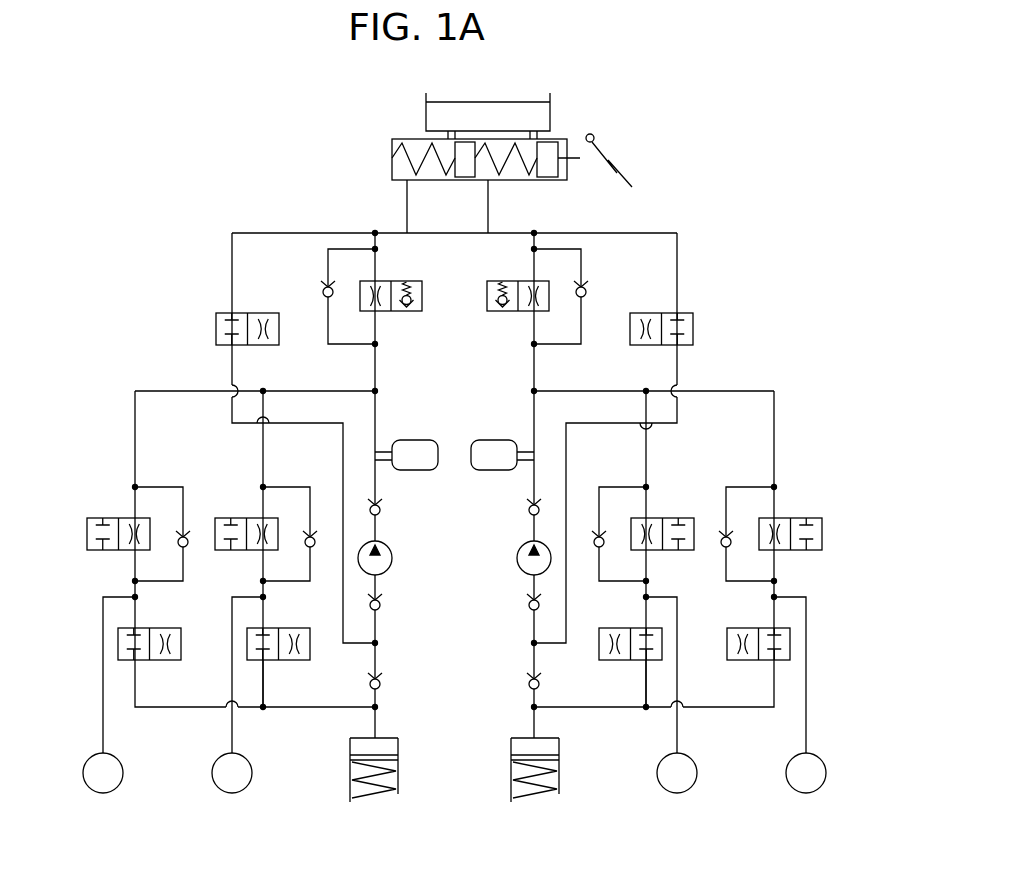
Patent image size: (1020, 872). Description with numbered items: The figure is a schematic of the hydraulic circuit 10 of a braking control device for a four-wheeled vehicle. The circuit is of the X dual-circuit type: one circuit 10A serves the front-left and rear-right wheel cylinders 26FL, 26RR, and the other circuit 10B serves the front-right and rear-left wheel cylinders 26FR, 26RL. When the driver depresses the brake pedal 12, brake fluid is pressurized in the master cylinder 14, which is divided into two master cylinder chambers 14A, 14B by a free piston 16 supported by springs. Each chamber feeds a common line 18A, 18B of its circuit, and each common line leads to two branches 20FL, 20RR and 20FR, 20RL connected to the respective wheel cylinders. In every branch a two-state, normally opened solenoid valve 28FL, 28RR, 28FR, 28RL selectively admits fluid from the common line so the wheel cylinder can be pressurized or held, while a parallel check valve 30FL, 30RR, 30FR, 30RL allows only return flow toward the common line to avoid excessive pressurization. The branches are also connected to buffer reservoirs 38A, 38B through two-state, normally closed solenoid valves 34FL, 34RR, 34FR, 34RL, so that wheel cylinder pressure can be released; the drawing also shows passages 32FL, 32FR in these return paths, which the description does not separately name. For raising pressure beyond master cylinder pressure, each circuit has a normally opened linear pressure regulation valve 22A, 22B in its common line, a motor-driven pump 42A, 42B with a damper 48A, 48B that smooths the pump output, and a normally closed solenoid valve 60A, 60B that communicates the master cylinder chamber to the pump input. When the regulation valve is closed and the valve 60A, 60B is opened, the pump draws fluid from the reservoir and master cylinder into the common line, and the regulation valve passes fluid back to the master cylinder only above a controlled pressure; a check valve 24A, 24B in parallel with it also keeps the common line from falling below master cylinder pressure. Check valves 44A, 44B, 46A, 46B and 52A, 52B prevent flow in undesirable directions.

The hydraulic circuit 10 is at (262, 133).
The first circuit 10A is at (693, 212).
The second circuit 10B is at (175, 218).
The brake pedal 12 is at (612, 157).
The master cylinder 14 is at (417, 137).
The master cylinder chamber 14A is at (510, 173).
The master cylinder chamber 14B is at (398, 170).
The free piston 16 is at (467, 170).
The common line 18A is at (532, 357).
The common line 18B is at (377, 355).
The branch 20RL is at (132, 433).
The branch 20FR is at (262, 443).
The branch 20FL is at (647, 443).
The branch 20RR is at (775, 453).
The linear pressure regulation valve 22A is at (517, 282).
The linear pressure regulation valve 22B is at (385, 282).
The check valve 24A is at (588, 298).
The check valve 24B is at (322, 298).
The wheel cylinder 26RL is at (122, 780).
The wheel cylinder 26FR is at (245, 780).
The wheel cylinder 26FL is at (658, 780).
The wheel cylinder 26RR is at (785, 782).
The solenoid valve 28RL is at (132, 518).
The solenoid valve 28FR is at (258, 518).
The solenoid valve 28FL is at (655, 518).
The solenoid valve 28RR is at (778, 518).
The check valve 30RL is at (186, 548).
The check valve 30FR is at (312, 548).
The check valve 30FL is at (595, 545).
The check valve 30RR is at (724, 545).
The return passage 32FR is at (265, 708).
The return passage 32FL is at (645, 708).
The solenoid valve 34RL is at (138, 661).
The solenoid valve 34FR is at (267, 661).
The solenoid valve 34FL is at (635, 661).
The solenoid valve 34RR is at (765, 661).
The buffer reservoir 38A is at (511, 790).
The buffer reservoir 38B is at (398, 790).
The motor-driven pump 42A is at (513, 560).
The motor-driven pump 42B is at (395, 560).
The check valve 44A is at (528, 685).
The check valve 44B is at (380, 688).
The check valve 46A is at (528, 607).
The check valve 46B is at (380, 605).
The damper 48A is at (473, 440).
The damper 48B is at (437, 440).
The check valve 52A is at (530, 510).
The check valve 52B is at (380, 510).
The solenoid valve 60A is at (672, 312).
The solenoid valve 60B is at (240, 312).